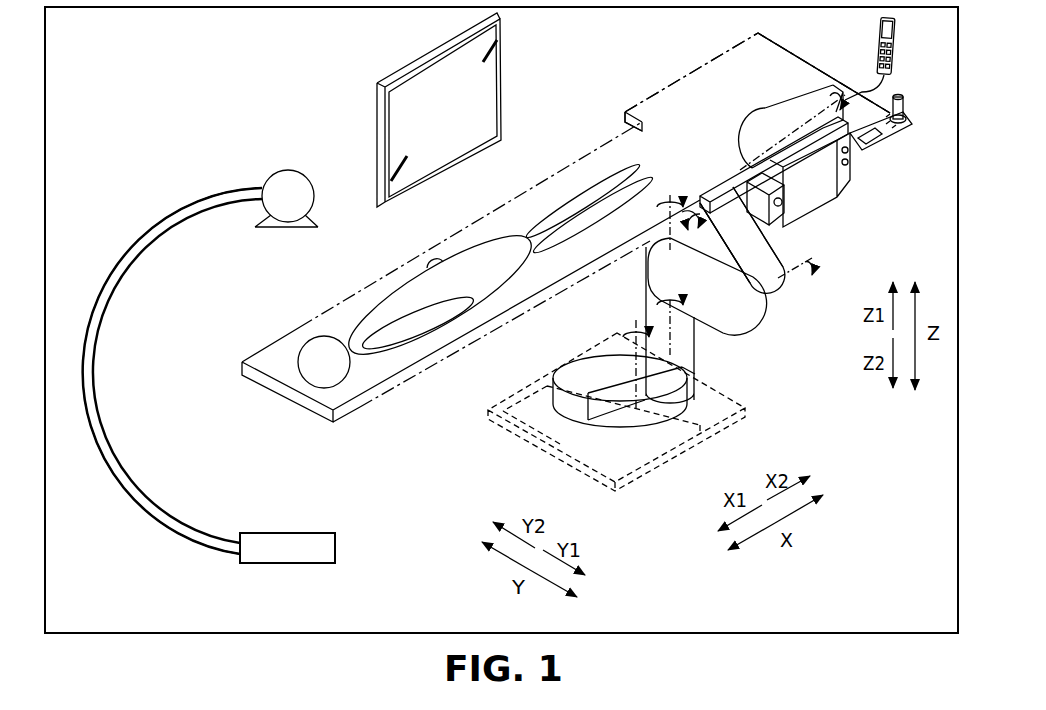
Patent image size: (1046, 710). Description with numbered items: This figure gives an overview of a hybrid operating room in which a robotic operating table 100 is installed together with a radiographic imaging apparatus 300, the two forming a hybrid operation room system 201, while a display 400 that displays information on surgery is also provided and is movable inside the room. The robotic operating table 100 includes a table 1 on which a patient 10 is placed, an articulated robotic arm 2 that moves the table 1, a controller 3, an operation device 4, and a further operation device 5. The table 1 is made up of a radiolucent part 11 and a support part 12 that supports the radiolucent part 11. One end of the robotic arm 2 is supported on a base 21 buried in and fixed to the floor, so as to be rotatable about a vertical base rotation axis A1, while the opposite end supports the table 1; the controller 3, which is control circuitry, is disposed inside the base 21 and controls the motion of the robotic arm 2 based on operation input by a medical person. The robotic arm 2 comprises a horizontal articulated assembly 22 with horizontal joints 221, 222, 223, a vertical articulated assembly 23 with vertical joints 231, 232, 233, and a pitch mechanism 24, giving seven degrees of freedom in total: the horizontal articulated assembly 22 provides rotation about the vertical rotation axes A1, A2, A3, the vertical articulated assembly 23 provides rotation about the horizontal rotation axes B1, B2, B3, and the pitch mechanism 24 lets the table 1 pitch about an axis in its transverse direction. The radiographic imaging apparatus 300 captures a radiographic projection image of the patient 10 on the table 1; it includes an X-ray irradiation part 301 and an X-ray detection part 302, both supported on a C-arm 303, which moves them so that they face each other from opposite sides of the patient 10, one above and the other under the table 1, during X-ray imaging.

The table 1 is at (688, 108).
The articulated robotic arm 2 is at (777, 327).
The controller 3 is at (521, 411).
The operation device 4 is at (891, 146).
The operation device 5 is at (896, 56).
The patient 10 is at (427, 297).
The radiolucent part 11 is at (281, 349).
The support part 12 is at (782, 77).
The base 21 is at (698, 423).
The horizontal articulated assembly 22 is at (714, 377).
The vertical articulated assembly 23 is at (819, 234).
The pitch mechanism 24 is at (816, 191).
The robotic operating table 100 is at (620, 95).
The hybrid operation room system 201 is at (676, 46).
The horizontal joint 221 is at (643, 387).
The horizontal joint 222 is at (676, 343).
The horizontal joint 223 is at (641, 268).
The vertical joint 231 is at (781, 292).
The vertical joint 232 is at (750, 196).
The vertical joint 233 is at (782, 127).
The radiographic imaging apparatus 300 is at (154, 200).
The X-ray irradiation part 301 is at (298, 182).
The X-ray detection part 302 is at (315, 533).
The C-arm 303 is at (98, 357).
The display 400 is at (360, 78).
The rotation axis A1 is at (632, 354).
The rotation axis A2 is at (667, 314).
The rotation axis A3 is at (674, 212).
The rotation axis B1 is at (814, 262).
The rotation axis B2 is at (707, 224).
The rotation axis B3 is at (792, 125).